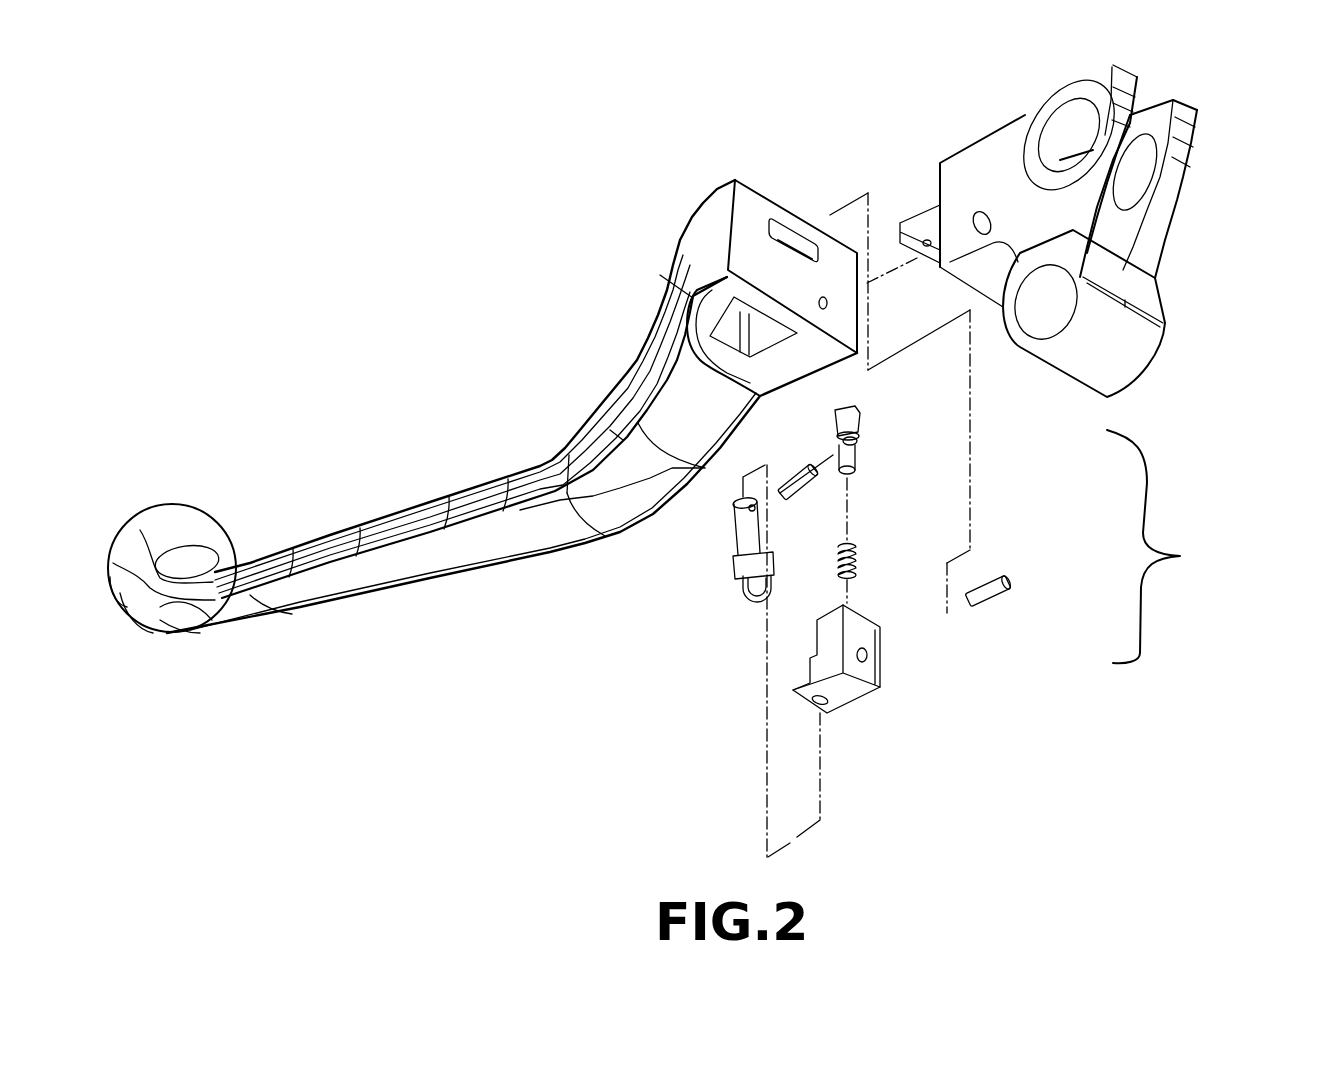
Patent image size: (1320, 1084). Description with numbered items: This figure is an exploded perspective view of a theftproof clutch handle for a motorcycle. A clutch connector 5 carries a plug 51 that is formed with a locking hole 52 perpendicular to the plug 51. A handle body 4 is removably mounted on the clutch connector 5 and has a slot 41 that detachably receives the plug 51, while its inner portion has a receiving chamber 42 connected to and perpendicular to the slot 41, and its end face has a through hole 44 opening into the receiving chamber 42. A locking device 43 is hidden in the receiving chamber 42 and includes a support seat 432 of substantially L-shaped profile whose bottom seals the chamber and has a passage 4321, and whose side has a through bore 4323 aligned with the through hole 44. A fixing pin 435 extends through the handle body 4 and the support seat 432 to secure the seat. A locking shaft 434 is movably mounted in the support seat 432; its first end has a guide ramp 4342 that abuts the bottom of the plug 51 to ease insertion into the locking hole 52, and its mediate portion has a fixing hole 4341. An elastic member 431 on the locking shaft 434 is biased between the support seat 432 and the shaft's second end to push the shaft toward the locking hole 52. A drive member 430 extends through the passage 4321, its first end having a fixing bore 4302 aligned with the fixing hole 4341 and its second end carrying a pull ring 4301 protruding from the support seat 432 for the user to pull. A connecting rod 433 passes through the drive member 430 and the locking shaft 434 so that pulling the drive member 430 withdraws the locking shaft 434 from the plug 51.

The handle body 4 is at (482, 406).
The slot 41 is at (790, 237).
The receiving chamber 42 is at (733, 337).
The locking device 43 is at (1169, 546).
The through hole 44 is at (825, 298).
The clutch connector 5 is at (1068, 230).
The plug 51 is at (920, 220).
The locking hole 52 is at (925, 247).
The drive member 430 is at (743, 537).
The pull ring 4301 is at (743, 597).
The fixing bore 4302 is at (777, 497).
The elastic member 431 is at (855, 552).
The support seat 432 is at (853, 693).
The passage 4321 is at (813, 698).
The through bore 4323 is at (867, 657).
The connecting rod 433 is at (802, 477).
The locking shaft 434 is at (853, 461).
The fixing hole 4341 is at (857, 442).
The guide ramp 4342 is at (853, 411).
The fixing pin 435 is at (993, 593).